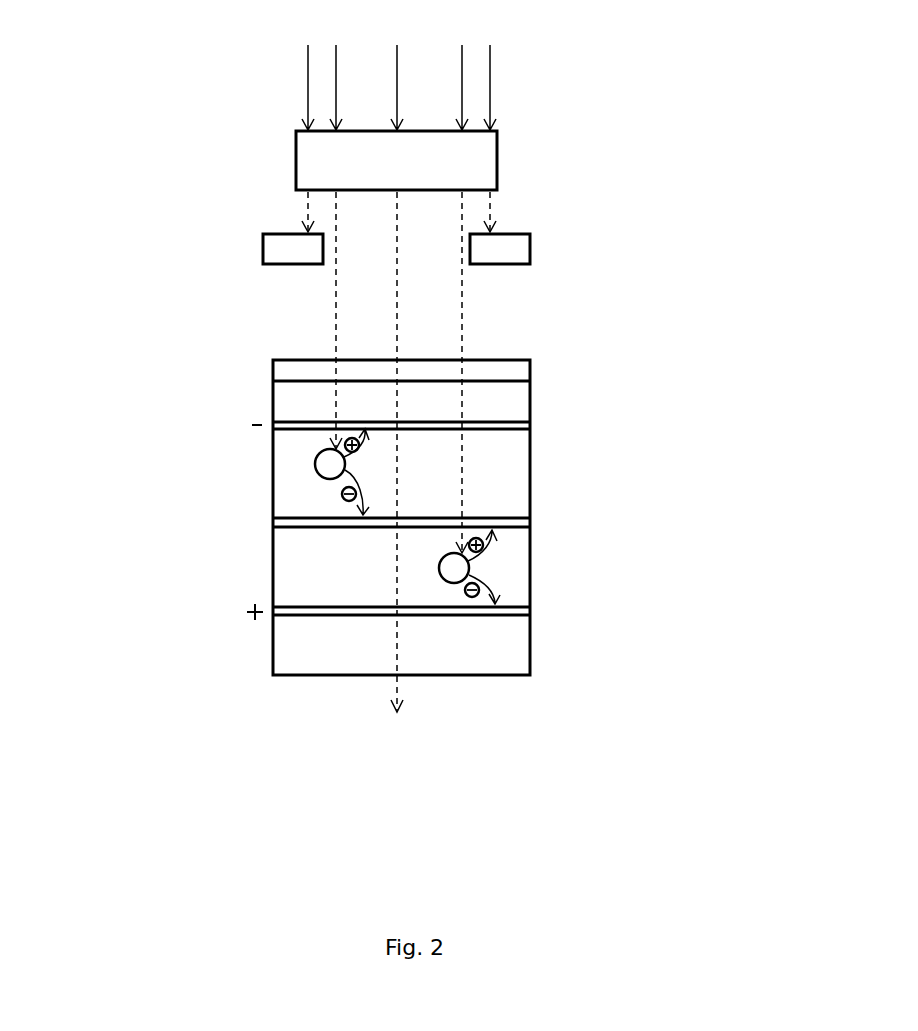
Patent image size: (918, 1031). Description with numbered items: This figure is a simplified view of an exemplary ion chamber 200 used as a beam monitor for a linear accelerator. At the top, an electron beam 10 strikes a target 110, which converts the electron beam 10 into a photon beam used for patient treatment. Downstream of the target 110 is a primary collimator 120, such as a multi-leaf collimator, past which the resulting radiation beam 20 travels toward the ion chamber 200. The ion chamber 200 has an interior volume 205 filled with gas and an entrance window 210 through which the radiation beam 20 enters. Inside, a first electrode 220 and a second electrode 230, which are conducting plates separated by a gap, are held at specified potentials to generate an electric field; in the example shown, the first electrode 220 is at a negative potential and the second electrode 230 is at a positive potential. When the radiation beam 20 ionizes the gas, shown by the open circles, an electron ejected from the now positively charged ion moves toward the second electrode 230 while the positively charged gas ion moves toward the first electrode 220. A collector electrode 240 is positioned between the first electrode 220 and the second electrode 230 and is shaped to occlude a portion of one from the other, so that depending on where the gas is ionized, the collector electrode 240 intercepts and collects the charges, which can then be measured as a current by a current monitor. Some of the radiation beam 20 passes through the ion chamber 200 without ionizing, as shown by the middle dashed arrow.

The electron beam 10 is at (490, 82).
The target 110 is at (497, 167).
The primary collimator 120 is at (520, 232).
The radiation beam 20 is at (463, 313).
The ion chamber 200 is at (225, 507).
The entrance window 210 is at (535, 366).
The first electrode 220 is at (530, 424).
The collector electrode 240 is at (532, 521).
The second electrode 230 is at (532, 609).
The interior volume 205 is at (502, 648).